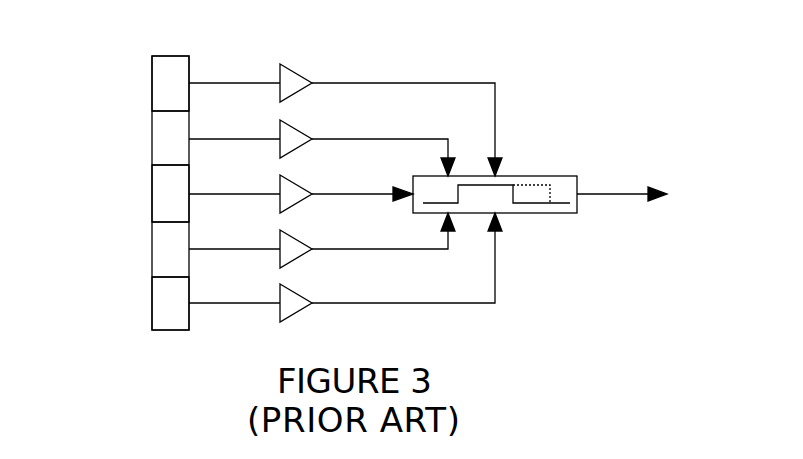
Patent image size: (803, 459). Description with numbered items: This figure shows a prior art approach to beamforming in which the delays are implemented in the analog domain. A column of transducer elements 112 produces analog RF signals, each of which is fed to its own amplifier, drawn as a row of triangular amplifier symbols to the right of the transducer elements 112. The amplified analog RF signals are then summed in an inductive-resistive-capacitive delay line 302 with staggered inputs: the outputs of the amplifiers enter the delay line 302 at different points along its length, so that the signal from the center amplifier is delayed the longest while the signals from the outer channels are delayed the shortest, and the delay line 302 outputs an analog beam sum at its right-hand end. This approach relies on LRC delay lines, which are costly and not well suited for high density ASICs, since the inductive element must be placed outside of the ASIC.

The transducer elements 112 is at (172, 56).
The inductive-resistive-capacitive (LRC) delay line 302 is at (532, 176).